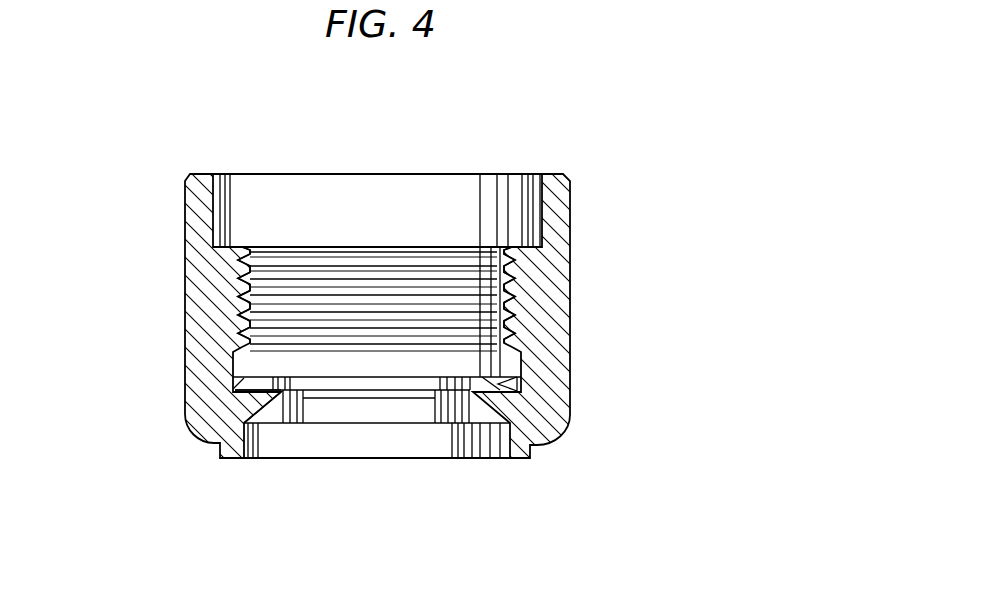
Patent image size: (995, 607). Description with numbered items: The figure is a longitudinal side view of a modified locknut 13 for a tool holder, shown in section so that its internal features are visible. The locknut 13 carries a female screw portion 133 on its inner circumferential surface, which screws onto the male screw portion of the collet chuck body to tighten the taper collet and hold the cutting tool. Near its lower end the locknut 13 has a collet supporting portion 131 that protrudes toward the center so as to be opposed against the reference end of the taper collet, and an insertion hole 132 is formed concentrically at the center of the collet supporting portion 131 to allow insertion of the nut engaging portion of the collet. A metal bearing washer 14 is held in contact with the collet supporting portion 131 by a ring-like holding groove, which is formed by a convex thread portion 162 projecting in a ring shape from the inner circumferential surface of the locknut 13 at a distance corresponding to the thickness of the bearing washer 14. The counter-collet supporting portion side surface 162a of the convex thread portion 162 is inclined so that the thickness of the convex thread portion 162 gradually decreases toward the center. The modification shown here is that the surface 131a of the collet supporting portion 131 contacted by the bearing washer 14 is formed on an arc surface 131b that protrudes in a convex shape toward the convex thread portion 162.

The locknut 13 is at (578, 193).
The bearing washer 14 is at (248, 382).
The collet supporting portion 131 is at (472, 408).
The surface 131a is at (258, 393).
The arc surface 131b is at (265, 390).
The insertion hole 132 is at (284, 408).
The female screw portion 133 is at (500, 280).
The convex thread portion 162 is at (500, 374).
The counter-collet supporting portion side surface 162a is at (496, 362).